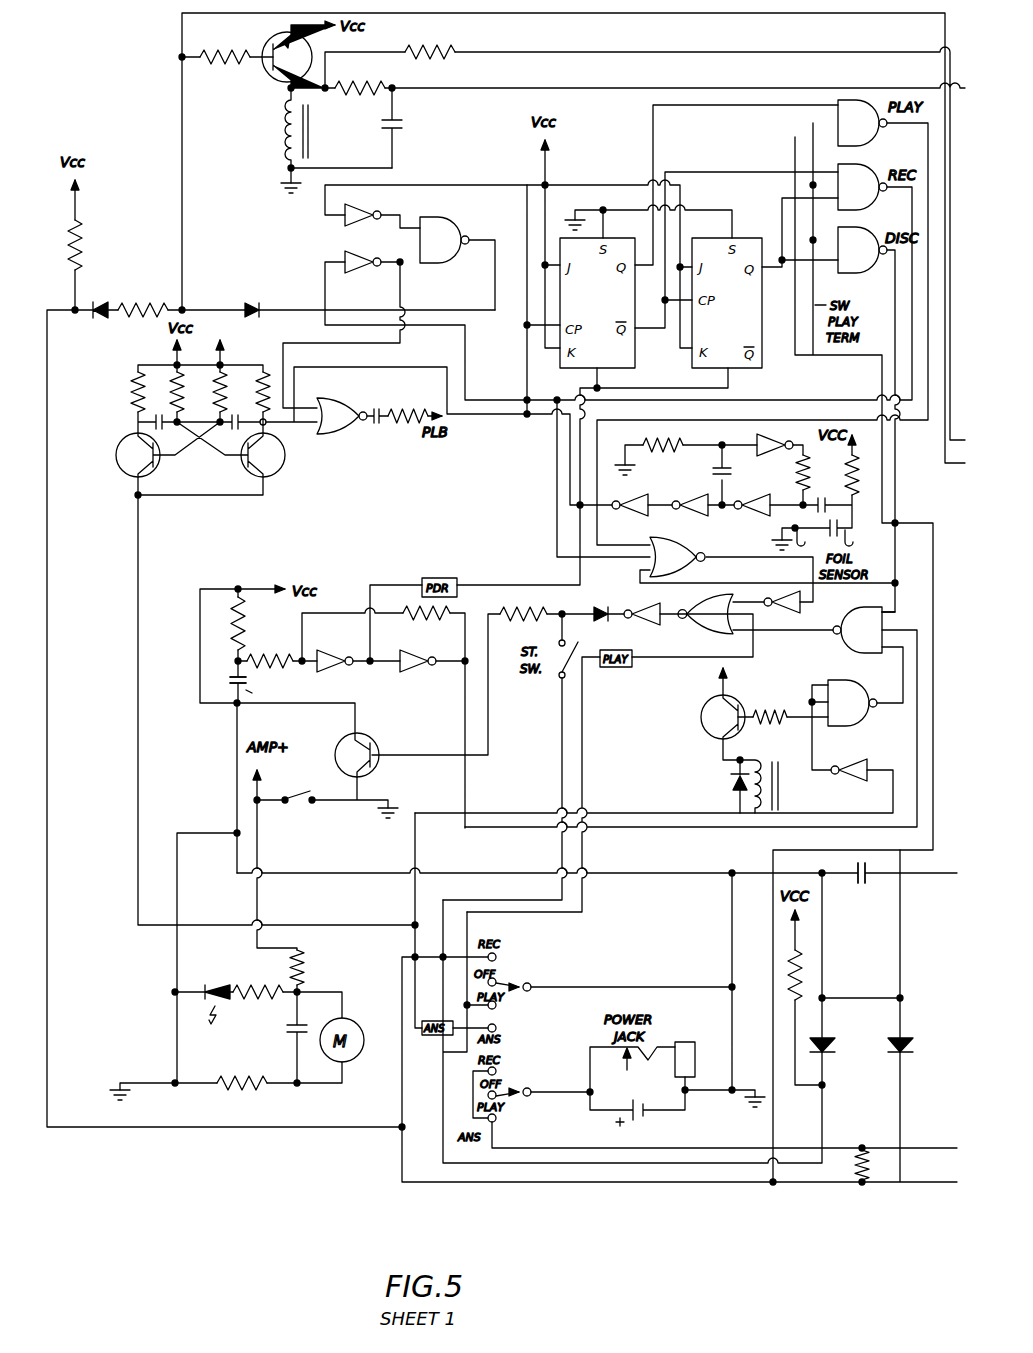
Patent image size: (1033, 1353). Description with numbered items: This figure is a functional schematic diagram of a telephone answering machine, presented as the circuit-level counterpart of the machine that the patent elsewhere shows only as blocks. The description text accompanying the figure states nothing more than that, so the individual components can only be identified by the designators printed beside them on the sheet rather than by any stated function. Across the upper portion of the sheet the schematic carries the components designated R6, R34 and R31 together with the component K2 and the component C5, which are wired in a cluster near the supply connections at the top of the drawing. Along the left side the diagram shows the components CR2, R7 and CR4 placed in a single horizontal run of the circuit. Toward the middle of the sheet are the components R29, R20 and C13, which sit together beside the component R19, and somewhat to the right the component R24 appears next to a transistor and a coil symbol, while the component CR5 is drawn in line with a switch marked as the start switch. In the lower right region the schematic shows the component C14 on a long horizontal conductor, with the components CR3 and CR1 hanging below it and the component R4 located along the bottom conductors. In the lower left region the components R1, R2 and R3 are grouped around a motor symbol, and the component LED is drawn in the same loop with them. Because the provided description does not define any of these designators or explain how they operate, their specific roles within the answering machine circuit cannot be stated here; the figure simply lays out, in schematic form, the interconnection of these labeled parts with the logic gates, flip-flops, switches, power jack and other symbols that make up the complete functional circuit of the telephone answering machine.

The resistor R6 is at (227, 49).
The resistor R34 is at (430, 44).
The resistor R31 is at (360, 97).
The relay coil K2 is at (338, 135).
The capacitor C5 is at (405, 128).
The diode CR2 is at (104, 299).
The resistor R7 is at (143, 298).
The diode CR4 is at (252, 298).
The resistor R29 is at (254, 623).
The resistor R20 is at (270, 670).
The capacitor C13 is at (256, 691).
The resistor R19 is at (426, 623).
The resistor R24 is at (770, 706).
The diode CR5 is at (595, 604).
The capacitor C14 is at (861, 885).
The diode CR3 is at (839, 1043).
The diode CR1 is at (917, 1043).
The resistor R4 is at (851, 1165).
The resistor R1 is at (310, 967).
The resistor R2 is at (258, 984).
The resistor R3 is at (242, 1072).
The light emitting diode LED is at (211, 982).